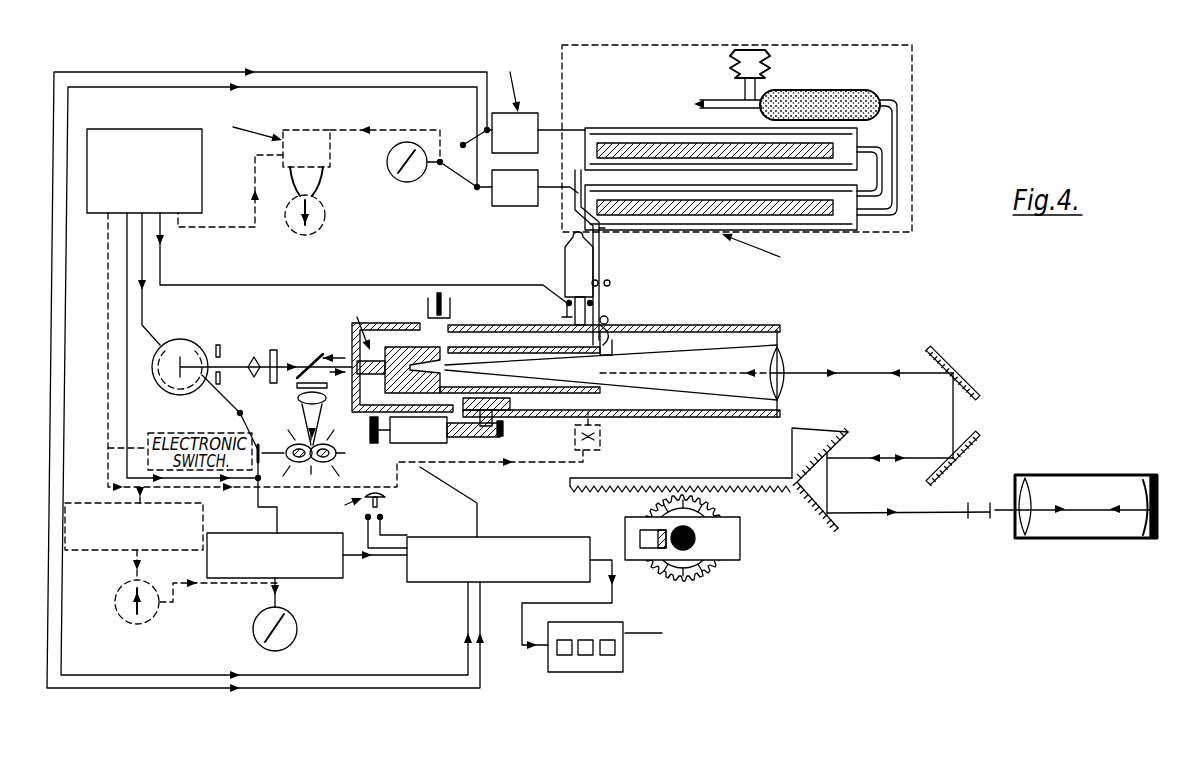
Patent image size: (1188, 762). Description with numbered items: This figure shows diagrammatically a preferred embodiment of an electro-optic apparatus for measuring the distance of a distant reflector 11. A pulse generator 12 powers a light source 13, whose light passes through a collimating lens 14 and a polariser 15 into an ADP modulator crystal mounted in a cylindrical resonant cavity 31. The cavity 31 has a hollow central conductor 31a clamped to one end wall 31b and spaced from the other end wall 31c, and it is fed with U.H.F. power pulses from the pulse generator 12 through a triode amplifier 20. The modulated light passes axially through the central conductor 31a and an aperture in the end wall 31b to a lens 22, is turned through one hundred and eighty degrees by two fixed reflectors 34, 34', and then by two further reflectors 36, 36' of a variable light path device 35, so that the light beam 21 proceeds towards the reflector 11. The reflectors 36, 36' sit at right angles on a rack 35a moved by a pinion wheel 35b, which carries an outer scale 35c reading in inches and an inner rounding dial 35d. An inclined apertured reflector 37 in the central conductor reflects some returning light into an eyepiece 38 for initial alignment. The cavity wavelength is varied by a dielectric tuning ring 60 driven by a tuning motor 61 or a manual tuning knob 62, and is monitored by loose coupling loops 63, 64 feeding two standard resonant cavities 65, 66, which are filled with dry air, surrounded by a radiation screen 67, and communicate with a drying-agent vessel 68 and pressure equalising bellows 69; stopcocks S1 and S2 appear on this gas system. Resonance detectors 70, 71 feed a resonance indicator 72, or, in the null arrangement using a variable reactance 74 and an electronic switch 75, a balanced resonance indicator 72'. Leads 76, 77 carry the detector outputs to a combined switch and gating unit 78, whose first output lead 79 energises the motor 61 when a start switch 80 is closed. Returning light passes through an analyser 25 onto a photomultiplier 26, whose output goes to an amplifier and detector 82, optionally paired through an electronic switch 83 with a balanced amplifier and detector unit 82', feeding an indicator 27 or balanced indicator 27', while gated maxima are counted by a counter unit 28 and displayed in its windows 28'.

The reflector 11 is at (1145, 525).
The pulse generator 12 is at (196, 191).
The light source 13 is at (312, 465).
The collimating lens 14 is at (318, 405).
The polariser 15 is at (298, 387).
The amplifier 20 is at (560, 264).
The light beam 21 is at (960, 518).
The lens 22 is at (779, 385).
The analyser 25 is at (274, 354).
The photomultiplier 26 is at (178, 346).
The indicator 27 is at (272, 639).
The balanced indicator 27' is at (180, 625).
The counter unit 28 is at (645, 662).
The windows 28' is at (601, 671).
The cylindrical resonant cavity 31 is at (506, 324).
The hollow central conductor 31a is at (555, 352).
The end wall 31b is at (615, 345).
The end wall 31c is at (353, 337).
The fixed reflector 34 is at (962, 402).
The fixed reflector 34' is at (919, 458).
The variable light path device 35 is at (768, 536).
The rack 35a is at (703, 534).
The pinion wheel 35b is at (718, 572).
The outer scale 35c is at (643, 548).
The rounding dial 35d is at (670, 556).
The reflector 36 is at (841, 479).
The reflector 36' is at (908, 528).
The inclined reflector 37 is at (470, 438).
The eyepiece 38 is at (452, 306).
The dielectric tuning ring 60 is at (495, 412).
The tuning motor 61 is at (408, 445).
The manual tuning knob 62 is at (369, 431).
The loose coupling loop 63 is at (612, 318).
The loose coupling loop 64 is at (610, 284).
The standard resonant cavity 65 is at (858, 221).
The standard resonant cavity 66 is at (884, 160).
The radiation screen 67 is at (910, 108).
The vessel 68 is at (873, 110).
The pressure equalising bellows 69 is at (733, 62).
The resonance detector 70 is at (525, 207).
The resonance detector 71 is at (527, 126).
The resonance indicator 72 is at (422, 169).
The balanced resonance indicator 72' is at (302, 232).
The variable reactance 74 is at (601, 440).
The electronic switch 75 is at (331, 154).
The lead 76 is at (356, 88).
The lead 77 is at (316, 73).
The combined switch and gating unit 78 is at (553, 547).
The first output lead 79 is at (428, 478).
The start switch 80 is at (382, 516).
The amplifier and detector 82 is at (307, 542).
The balanced amplifier and detector unit 82' is at (134, 543).
The electronic switch 83 is at (250, 455).
The stopcock S1 is at (600, 180).
The stopcock S2 is at (622, 232).